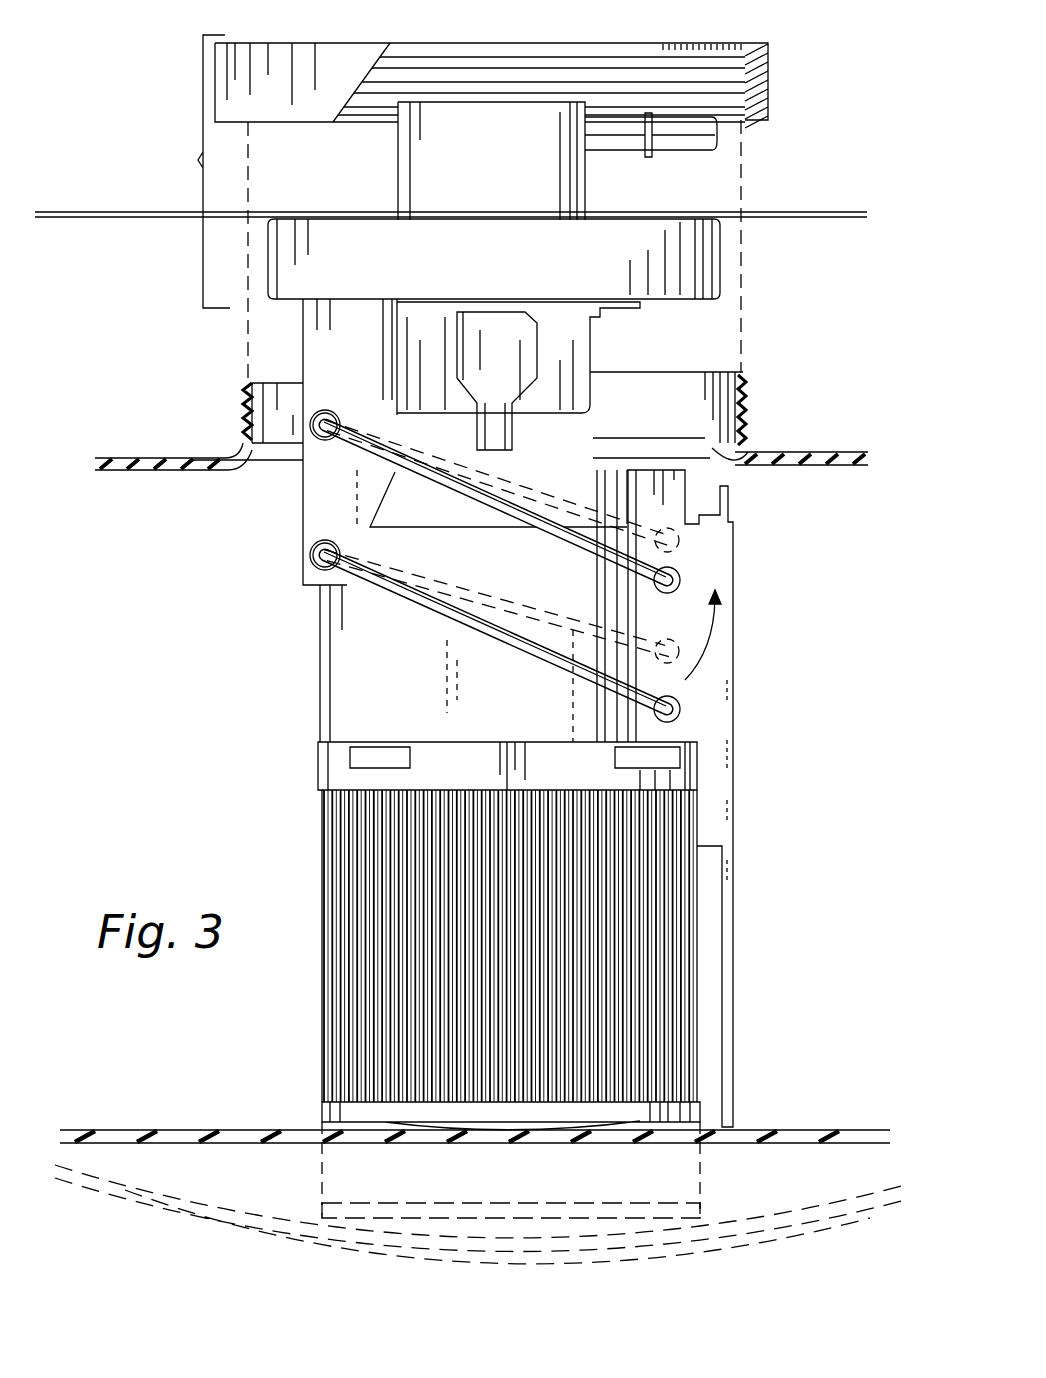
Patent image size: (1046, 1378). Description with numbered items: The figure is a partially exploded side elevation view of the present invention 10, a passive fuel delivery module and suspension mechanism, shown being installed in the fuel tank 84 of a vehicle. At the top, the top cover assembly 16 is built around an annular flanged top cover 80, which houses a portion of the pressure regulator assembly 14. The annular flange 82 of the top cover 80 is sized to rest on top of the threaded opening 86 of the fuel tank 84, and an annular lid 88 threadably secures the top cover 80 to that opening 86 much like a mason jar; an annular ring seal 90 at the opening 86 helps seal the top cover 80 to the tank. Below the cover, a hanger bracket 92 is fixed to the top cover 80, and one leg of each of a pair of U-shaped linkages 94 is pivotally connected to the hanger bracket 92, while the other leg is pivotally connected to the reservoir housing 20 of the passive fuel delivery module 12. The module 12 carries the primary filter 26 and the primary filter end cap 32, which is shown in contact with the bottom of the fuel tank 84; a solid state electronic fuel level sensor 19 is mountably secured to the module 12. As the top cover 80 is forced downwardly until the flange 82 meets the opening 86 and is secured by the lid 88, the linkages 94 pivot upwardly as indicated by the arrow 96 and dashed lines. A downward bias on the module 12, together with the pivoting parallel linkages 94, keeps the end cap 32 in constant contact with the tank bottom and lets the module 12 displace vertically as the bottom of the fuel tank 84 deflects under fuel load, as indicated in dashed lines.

The present invention 10 is at (557, 241).
The passive fuel delivery module 12 is at (448, 760).
The pressure regulator assembly 14 is at (542, 376).
The top cover assembly 16 is at (168, 171).
The solid state electronic fuel level sensor 19 is at (716, 798).
The reservoir housing 20 is at (438, 606).
The primary filter 26 is at (486, 946).
The primary filter end cap 32 is at (517, 1140).
The annular flanged top cover 80 is at (432, 278).
The annular flange 82 is at (451, 242).
The fuel tank 84 is at (480, 840).
The threaded opening 86 is at (231, 412).
The annular lid 88 is at (491, 79).
The annular ring seal 90 is at (717, 408).
The hanger bracket 92 is at (465, 442).
The U-shaped linkages 94 is at (495, 566).
The arrow 96 is at (739, 635).